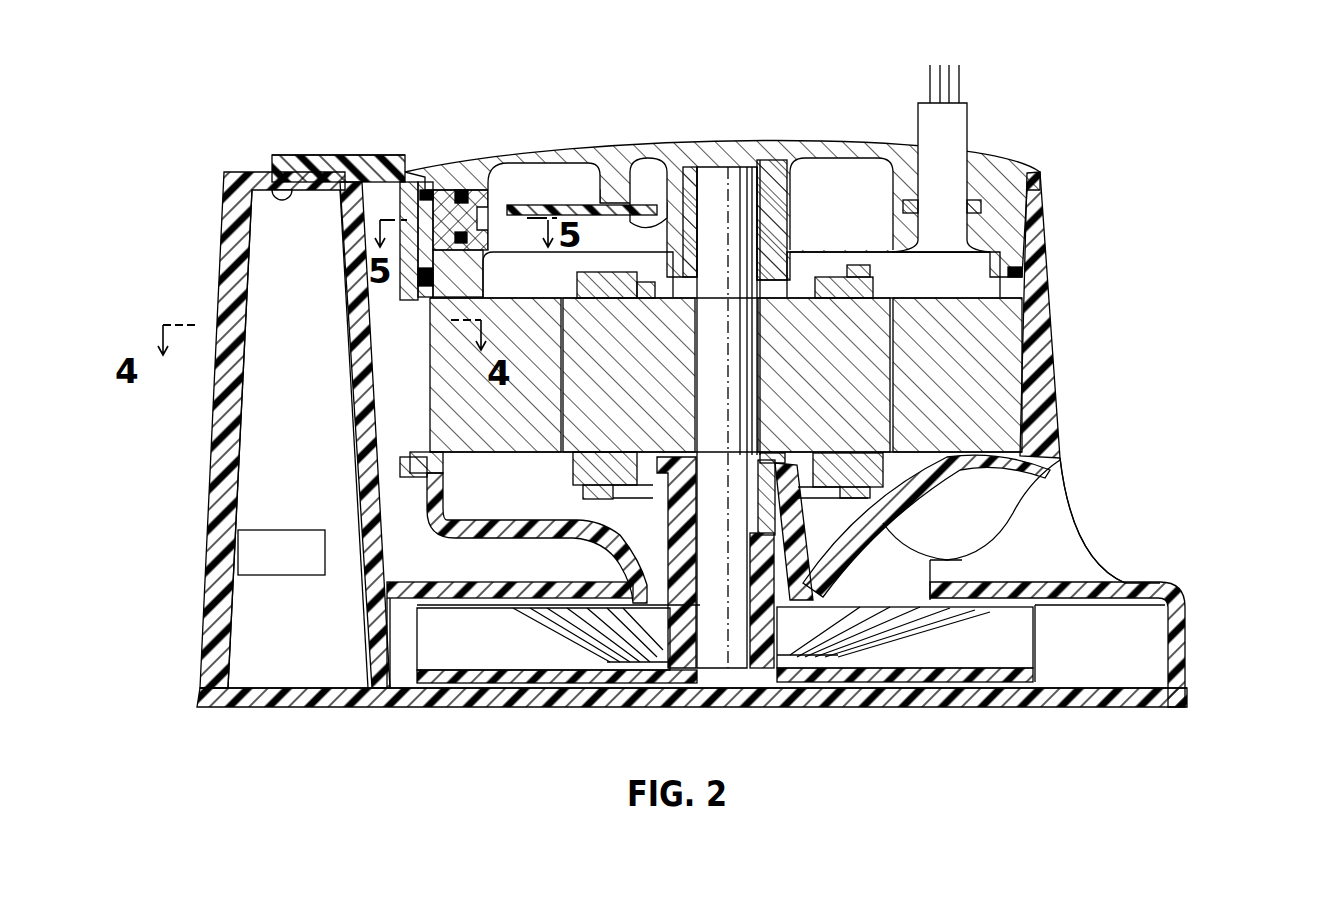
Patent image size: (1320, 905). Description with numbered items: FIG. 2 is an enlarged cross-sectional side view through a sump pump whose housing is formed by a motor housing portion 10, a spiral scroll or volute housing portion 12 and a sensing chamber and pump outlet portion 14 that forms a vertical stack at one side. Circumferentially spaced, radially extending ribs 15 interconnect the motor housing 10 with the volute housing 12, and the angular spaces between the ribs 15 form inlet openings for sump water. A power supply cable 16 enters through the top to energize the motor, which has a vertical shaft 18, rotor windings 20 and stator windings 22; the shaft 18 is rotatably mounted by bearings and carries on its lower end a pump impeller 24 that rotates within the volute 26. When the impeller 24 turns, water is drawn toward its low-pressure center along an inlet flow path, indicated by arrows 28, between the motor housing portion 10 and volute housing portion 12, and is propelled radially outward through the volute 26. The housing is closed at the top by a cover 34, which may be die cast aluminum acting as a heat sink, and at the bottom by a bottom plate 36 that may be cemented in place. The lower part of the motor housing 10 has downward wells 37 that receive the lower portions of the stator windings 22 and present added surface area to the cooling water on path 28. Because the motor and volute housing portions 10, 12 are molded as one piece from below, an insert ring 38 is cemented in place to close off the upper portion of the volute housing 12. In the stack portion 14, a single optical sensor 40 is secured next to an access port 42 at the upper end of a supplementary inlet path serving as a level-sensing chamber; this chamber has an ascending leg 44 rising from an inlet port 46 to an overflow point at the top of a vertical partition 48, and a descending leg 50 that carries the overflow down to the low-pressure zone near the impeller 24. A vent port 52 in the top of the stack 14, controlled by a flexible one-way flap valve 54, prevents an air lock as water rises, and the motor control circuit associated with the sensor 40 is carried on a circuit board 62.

The motor housing portion 10 is at (1050, 248).
The volute housing portion 12 is at (1195, 668).
The sensing chamber and pump outlet portion 14 is at (222, 207).
The ribs 15 is at (1088, 572).
The power supply cable 16 is at (958, 122).
The vertical shaft 18 is at (725, 382).
The rotor windings 20 is at (826, 382).
The stator windings 22 is at (980, 385).
The pump impeller 24 is at (1005, 655).
The volute 26 is at (1145, 620).
The inlet flow path 28 is at (1033, 543).
The cover 34 is at (787, 150).
The bottom plate 36 is at (985, 705).
The motor winding wells 37 is at (1000, 498).
The insert ring 38 is at (520, 585).
The optical sensor 40 is at (488, 195).
The access port 42 is at (412, 212).
The ascending leg 44 is at (250, 452).
The inlet port 46 is at (270, 572).
The vertical partition 48 is at (350, 300).
The descending leg 50 is at (388, 396).
The vent port 52 is at (382, 160).
The flexible one-way flap valve 54 is at (335, 160).
The circuit board 62 is at (600, 215).